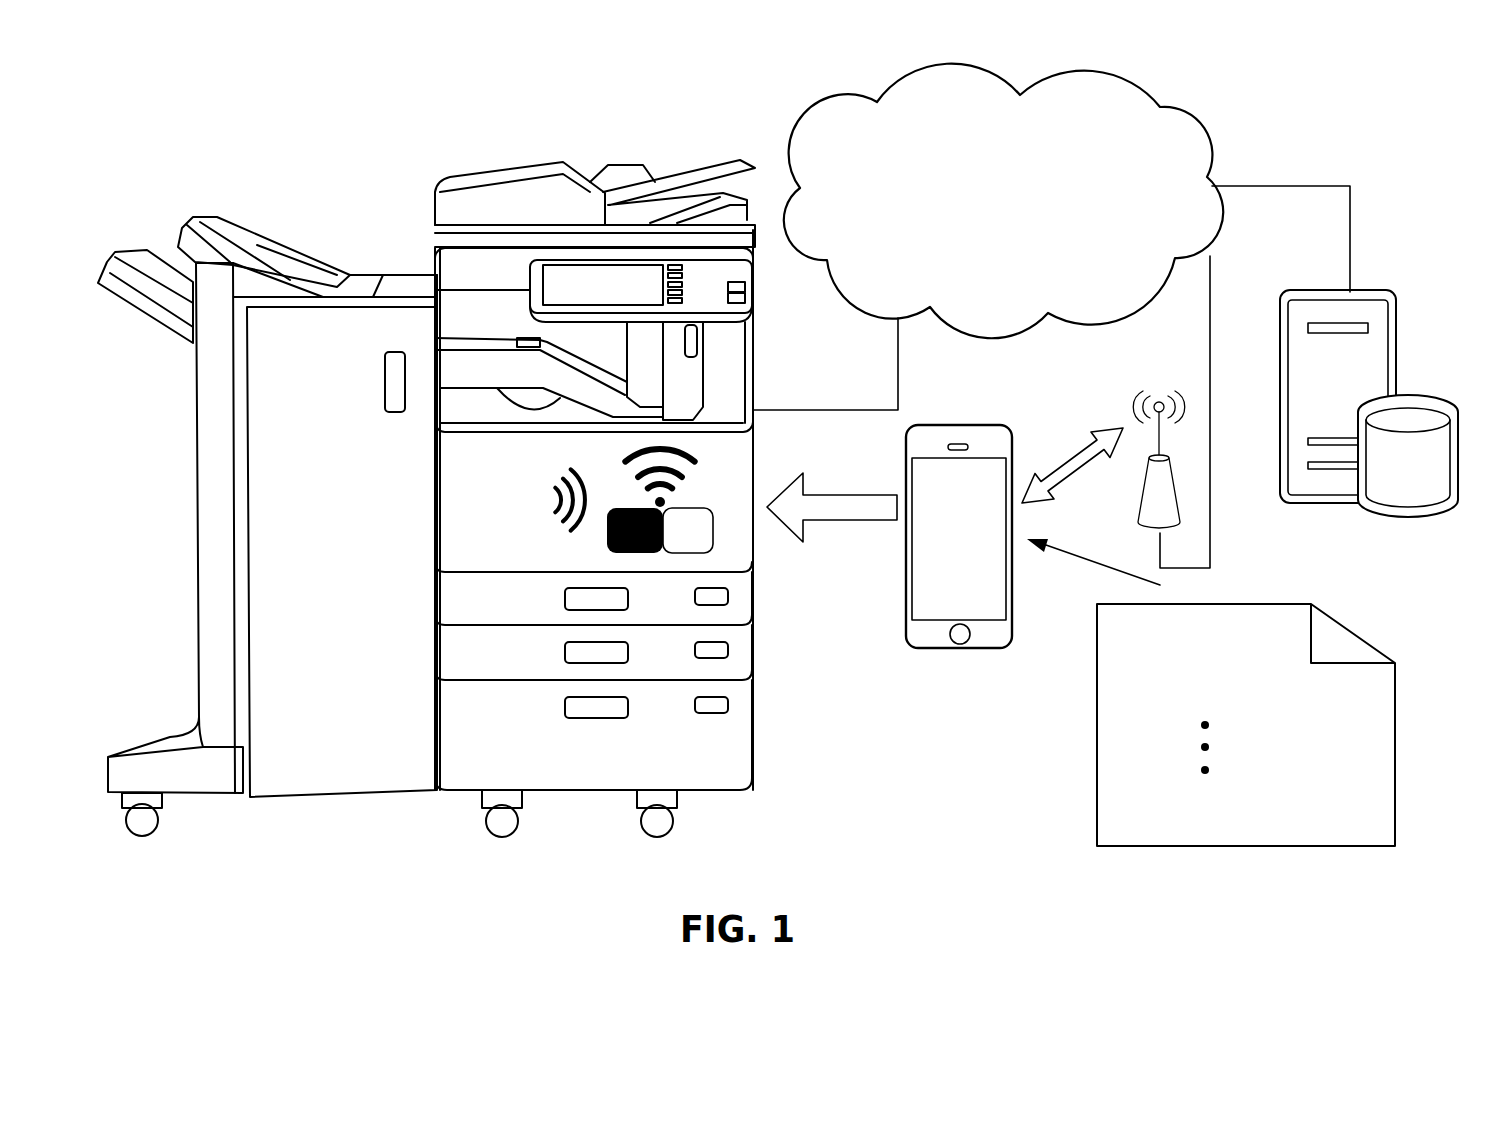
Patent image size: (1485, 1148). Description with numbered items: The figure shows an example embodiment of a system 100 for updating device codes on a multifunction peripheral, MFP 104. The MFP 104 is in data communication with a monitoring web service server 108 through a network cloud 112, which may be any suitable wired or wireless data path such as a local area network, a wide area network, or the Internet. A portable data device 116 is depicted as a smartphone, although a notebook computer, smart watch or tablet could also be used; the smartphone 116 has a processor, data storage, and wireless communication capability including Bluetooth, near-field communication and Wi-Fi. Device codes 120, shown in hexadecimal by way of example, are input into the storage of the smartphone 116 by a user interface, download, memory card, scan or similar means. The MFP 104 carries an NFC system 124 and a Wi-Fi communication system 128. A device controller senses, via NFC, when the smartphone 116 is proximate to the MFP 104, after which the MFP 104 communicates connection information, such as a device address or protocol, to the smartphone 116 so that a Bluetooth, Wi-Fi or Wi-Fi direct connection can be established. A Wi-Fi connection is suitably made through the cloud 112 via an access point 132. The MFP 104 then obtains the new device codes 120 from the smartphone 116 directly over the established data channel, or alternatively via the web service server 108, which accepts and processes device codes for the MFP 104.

The system 100 is at (1322, 112).
The MFP 104 is at (752, 748).
The monitoring web service server 108 is at (1423, 395).
The network cloud 112 is at (1182, 93).
The portable data device 116 is at (1013, 437).
The device codes 120 is at (1395, 731).
The NFC system 124 is at (520, 513).
The Wi-Fi communication system 128 is at (650, 553).
The access point 132 is at (1175, 495).